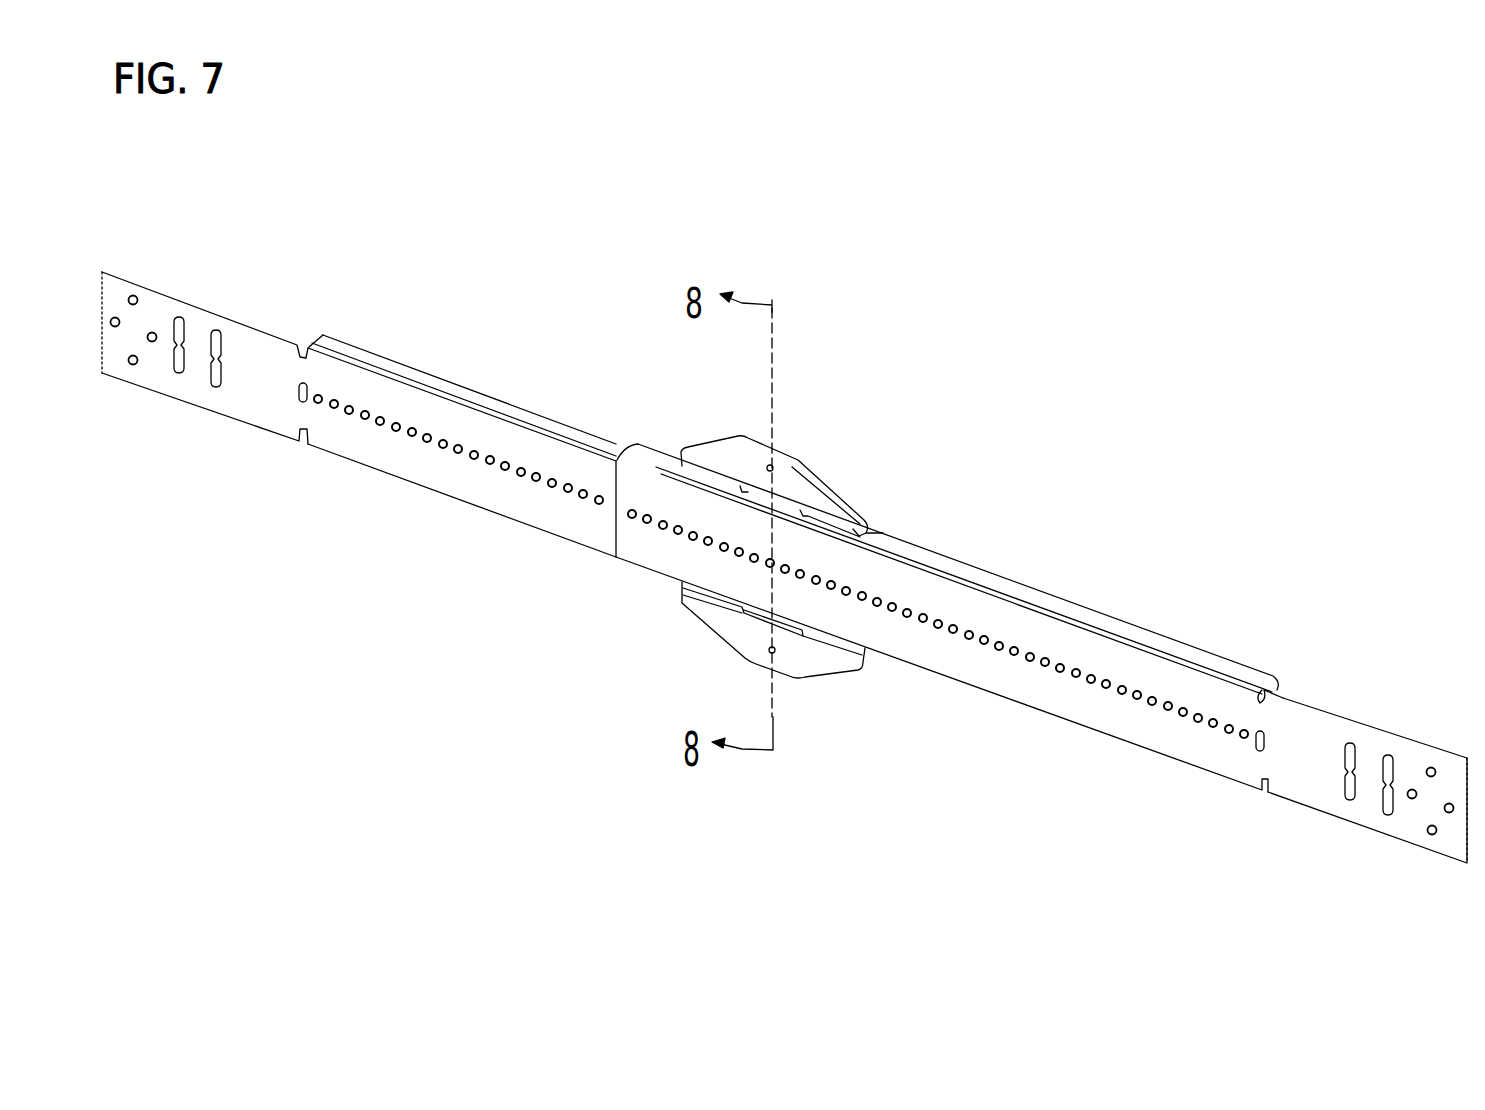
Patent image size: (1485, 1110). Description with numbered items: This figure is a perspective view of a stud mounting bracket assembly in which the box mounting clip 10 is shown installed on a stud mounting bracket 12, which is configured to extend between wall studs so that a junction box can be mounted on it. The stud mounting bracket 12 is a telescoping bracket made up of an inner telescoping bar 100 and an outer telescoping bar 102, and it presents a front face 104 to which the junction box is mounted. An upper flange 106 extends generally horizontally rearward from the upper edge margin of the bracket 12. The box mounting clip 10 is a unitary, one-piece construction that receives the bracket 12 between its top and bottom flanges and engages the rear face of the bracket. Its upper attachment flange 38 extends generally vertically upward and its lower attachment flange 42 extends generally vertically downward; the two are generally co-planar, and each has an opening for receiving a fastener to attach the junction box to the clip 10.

The stud mounting bracket 12 is at (272, 338).
The inner telescoping bar 100 is at (378, 482).
The outer telescoping bar 102 is at (949, 618).
The front face 104 is at (982, 625).
The upper flange 106 is at (912, 540).
The box mounting clip 10 is at (794, 574).
The upper attachment flange 38 is at (813, 488).
The lower attachment flange 42 is at (816, 668).